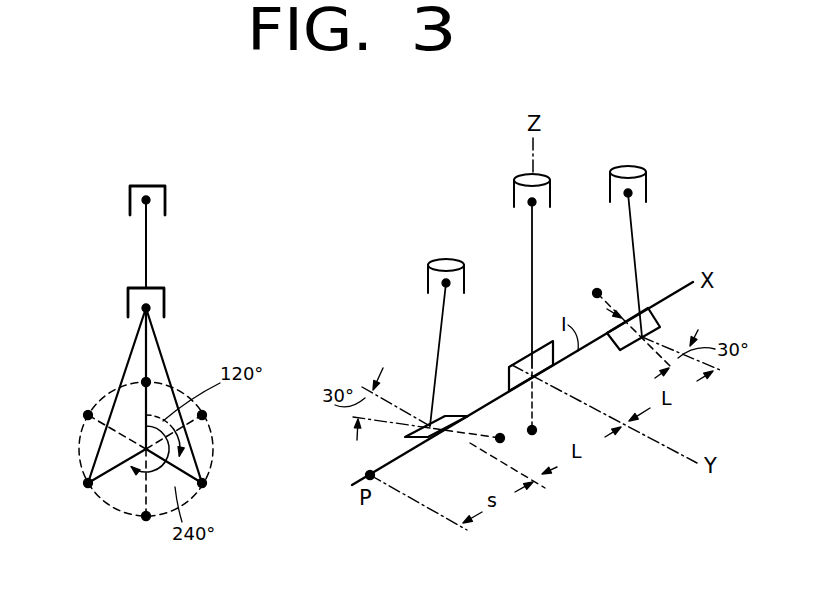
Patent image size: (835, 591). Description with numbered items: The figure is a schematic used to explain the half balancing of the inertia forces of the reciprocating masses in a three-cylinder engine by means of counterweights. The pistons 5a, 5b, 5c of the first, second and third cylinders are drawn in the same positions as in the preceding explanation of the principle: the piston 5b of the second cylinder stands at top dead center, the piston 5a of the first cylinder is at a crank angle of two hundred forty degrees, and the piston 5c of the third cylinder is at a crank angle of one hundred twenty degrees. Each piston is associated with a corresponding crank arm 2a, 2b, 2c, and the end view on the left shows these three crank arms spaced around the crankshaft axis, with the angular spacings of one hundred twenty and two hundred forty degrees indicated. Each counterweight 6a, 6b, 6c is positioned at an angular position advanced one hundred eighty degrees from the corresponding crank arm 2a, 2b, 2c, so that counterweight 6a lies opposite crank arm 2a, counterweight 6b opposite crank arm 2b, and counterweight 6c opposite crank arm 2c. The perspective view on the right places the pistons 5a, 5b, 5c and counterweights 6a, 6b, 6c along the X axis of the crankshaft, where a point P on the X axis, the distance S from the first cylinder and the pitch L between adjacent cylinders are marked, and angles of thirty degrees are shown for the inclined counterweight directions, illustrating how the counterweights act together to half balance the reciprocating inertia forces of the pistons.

The crank arm 2a is at (92, 487).
The crank arm 2b is at (150, 405).
The crank arm 2c is at (205, 487).
The piston 5a is at (167, 312).
The piston 5b is at (167, 213).
The piston 5c is at (646, 194).
The counterweight 6a is at (207, 417).
The counterweight 6b is at (146, 520).
The counterweight 6c is at (86, 415).